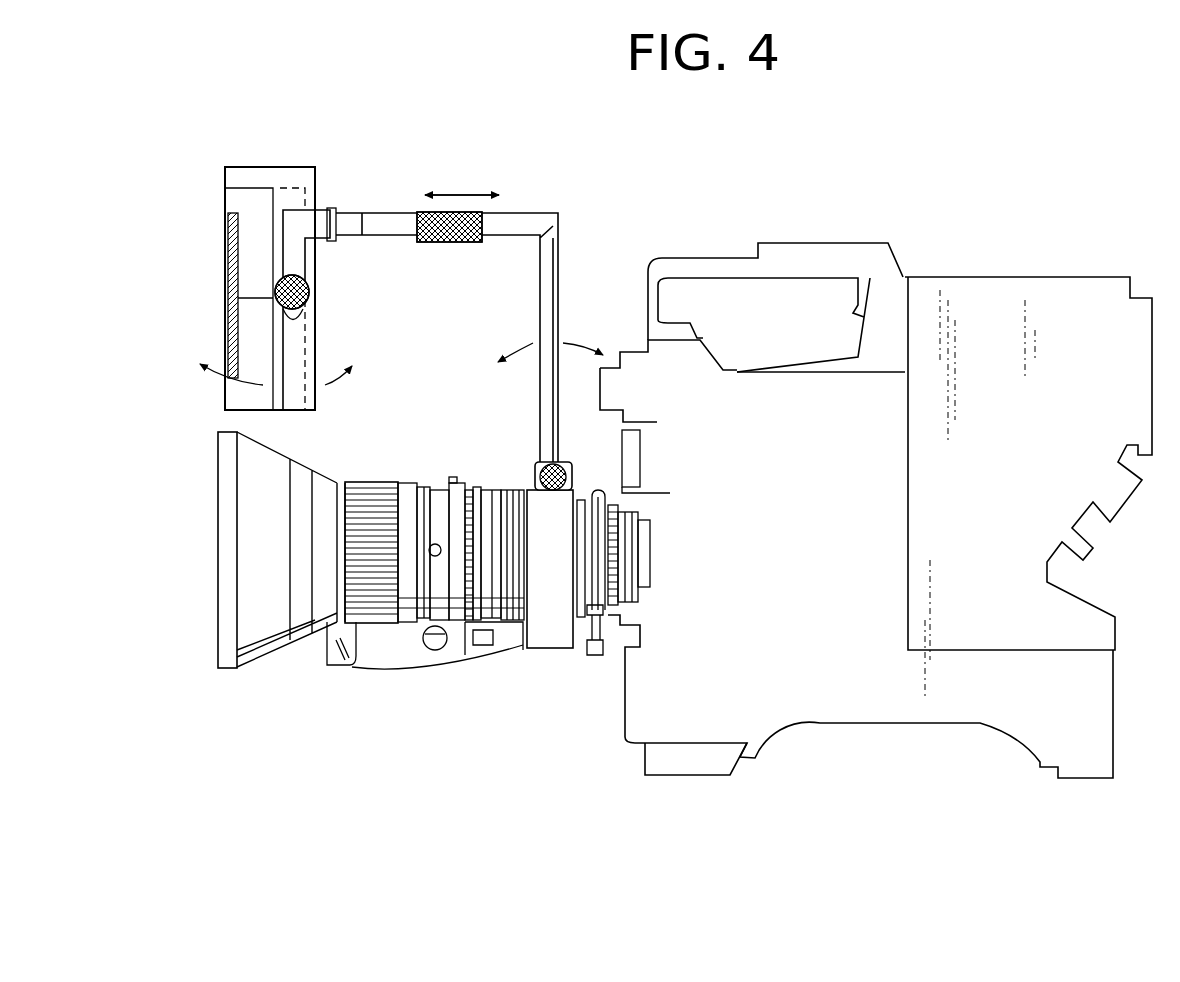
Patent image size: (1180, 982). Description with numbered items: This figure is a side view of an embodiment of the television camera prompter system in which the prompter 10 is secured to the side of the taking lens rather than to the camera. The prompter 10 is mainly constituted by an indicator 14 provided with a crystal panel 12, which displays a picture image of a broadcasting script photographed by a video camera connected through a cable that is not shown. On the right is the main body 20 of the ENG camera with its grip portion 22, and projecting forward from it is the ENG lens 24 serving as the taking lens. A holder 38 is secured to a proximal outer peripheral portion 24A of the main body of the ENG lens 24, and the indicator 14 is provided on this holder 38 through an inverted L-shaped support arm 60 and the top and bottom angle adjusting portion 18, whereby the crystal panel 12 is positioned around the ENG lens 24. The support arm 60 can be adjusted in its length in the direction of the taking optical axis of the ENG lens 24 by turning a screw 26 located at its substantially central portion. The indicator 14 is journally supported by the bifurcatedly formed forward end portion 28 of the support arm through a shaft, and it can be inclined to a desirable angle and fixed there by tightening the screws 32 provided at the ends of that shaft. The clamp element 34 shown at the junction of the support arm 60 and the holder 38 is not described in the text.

The prompter 10 is at (258, 152).
The indicator 14 is at (283, 167).
The crystal panel 12 is at (228, 262).
The forward end portion 28 is at (317, 247).
The screws 32 is at (313, 310).
The screw 26 is at (452, 242).
The support arm 60 is at (563, 252).
The grip portion 22 is at (833, 243).
The main body 20 is at (957, 268).
The ENG lens 24 is at (408, 480).
The clamp knob 34 is at (543, 463).
The top and bottom angle adjusting portion 18 is at (532, 475).
The proximal outer peripheral portion 24A is at (520, 560).
The holder 38 is at (550, 620).